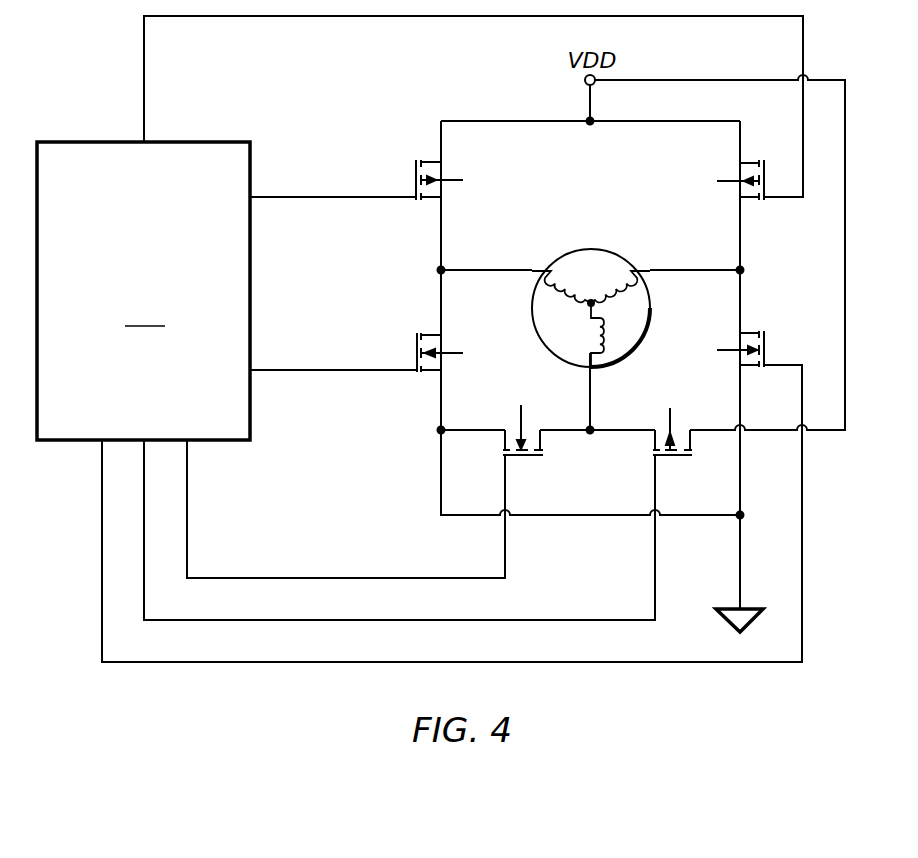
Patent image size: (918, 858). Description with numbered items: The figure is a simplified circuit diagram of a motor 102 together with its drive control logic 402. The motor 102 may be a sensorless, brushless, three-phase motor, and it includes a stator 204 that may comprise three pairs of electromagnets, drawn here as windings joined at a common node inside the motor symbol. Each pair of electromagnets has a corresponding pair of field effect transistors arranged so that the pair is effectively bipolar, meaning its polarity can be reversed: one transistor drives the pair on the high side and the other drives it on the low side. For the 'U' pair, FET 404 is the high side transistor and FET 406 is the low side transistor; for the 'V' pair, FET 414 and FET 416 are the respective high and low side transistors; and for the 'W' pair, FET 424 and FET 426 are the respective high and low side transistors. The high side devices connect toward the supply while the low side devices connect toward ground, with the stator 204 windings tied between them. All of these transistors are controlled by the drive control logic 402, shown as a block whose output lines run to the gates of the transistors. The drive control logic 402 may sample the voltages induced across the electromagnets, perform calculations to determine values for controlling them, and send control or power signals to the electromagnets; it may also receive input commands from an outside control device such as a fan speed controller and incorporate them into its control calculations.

The motor 102 is at (632, 253).
The stator 204 is at (585, 250).
The drive control logic 402 is at (143, 291).
The FET 404 is at (452, 180).
The FET 406 is at (452, 354).
The FET 414 is at (728, 181).
The FET 416 is at (722, 352).
The FET 424 is at (653, 450).
The FET 426 is at (523, 456).